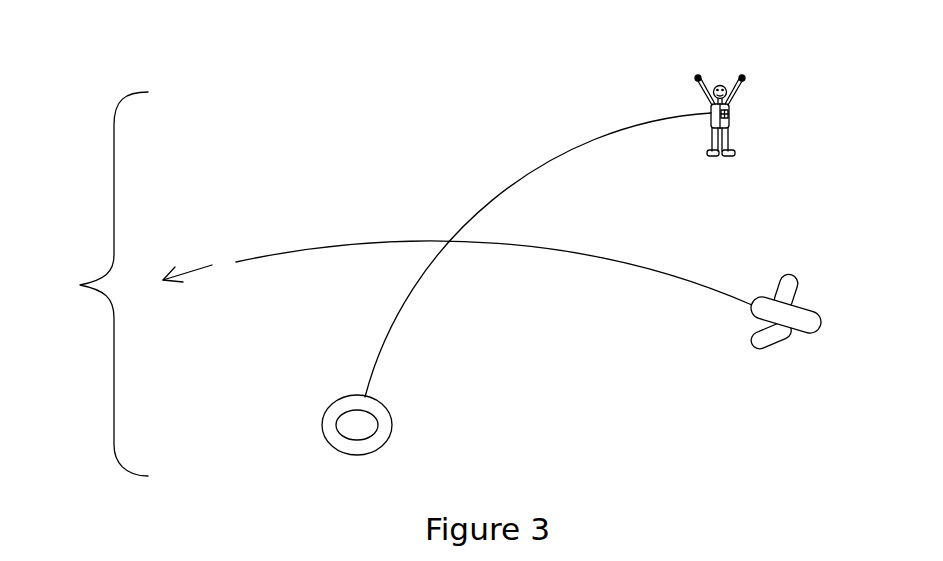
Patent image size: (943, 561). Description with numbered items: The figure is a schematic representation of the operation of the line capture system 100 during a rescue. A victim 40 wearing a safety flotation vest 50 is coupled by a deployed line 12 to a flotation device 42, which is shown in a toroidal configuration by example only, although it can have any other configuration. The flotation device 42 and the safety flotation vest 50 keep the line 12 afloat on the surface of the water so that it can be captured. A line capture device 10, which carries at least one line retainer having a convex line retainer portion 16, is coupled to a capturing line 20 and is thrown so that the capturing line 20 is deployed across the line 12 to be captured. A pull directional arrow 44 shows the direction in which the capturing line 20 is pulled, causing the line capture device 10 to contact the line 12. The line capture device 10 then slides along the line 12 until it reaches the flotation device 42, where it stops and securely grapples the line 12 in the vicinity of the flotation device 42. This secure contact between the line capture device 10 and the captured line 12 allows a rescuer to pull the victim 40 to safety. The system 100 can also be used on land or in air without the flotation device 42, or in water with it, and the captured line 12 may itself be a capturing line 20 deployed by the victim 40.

The line capture system 100 is at (87, 284).
The line capture device 10 is at (801, 320).
The line 12 is at (490, 198).
The line retainer portion 16 is at (760, 348).
The capturing line 20 is at (283, 250).
The victim 40 is at (728, 107).
The flotation device 42 is at (392, 425).
The pull directional arrow 44 is at (187, 288).
The safety flotation vest 50 is at (710, 127).